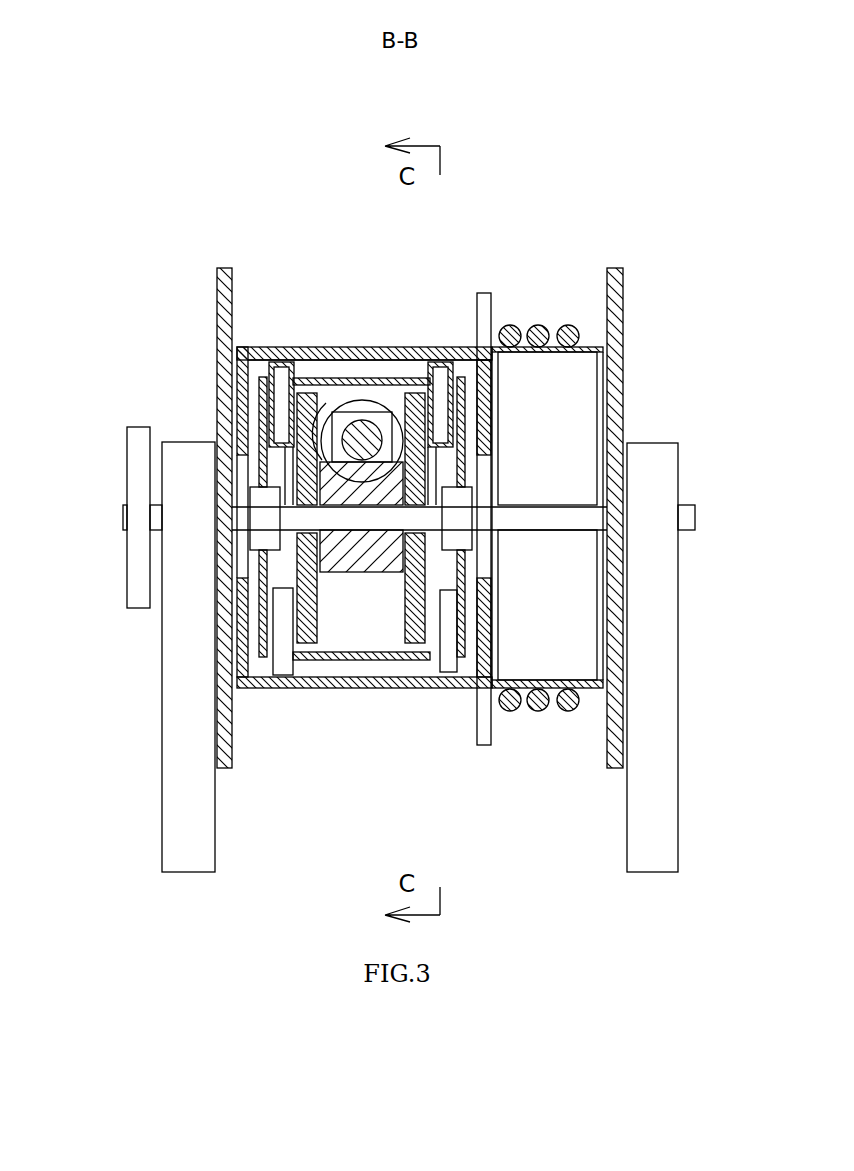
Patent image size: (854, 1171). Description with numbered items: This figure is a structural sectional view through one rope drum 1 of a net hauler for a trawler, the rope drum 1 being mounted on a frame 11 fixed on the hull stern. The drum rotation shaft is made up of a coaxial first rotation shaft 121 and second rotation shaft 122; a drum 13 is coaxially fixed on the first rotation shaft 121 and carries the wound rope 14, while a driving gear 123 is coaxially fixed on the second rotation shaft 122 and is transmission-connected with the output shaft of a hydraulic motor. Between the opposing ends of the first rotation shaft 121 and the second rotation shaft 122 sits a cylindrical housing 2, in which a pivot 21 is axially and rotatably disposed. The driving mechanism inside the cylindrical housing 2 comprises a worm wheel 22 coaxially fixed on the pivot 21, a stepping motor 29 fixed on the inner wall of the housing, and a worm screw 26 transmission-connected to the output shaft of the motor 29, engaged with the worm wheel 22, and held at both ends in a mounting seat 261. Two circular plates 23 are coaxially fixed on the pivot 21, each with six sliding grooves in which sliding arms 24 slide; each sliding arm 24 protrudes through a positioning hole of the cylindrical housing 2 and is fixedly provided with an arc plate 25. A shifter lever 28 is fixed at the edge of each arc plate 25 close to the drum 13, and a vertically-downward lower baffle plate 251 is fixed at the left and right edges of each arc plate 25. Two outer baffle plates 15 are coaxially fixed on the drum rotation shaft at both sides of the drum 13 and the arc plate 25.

The rope drum 1 is at (172, 280).
The cylindrical housing 2 is at (340, 690).
The frame 11 is at (172, 700).
The drum 13 is at (607, 412).
The rope 14 is at (569, 326).
The outer baffle plate 15 is at (232, 360).
The pivot 21 is at (430, 518).
The worm wheel 22 is at (366, 552).
The circular plate 23 is at (420, 473).
The sliding arm 24 is at (445, 385).
The arc plate 25 is at (283, 690).
The worm screw 26 is at (361, 419).
The shifter lever 28 is at (483, 300).
The motor 29 is at (328, 430).
The first rotation shaft 121 is at (683, 520).
The second rotation shaft 122 is at (155, 514).
The driving gear 123 is at (138, 583).
The lower baffle plate 251 is at (482, 652).
The mounting seat 261 is at (383, 378).